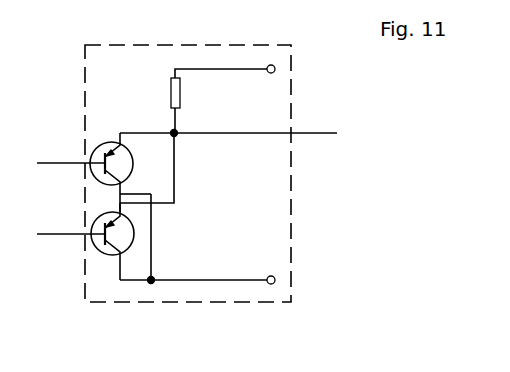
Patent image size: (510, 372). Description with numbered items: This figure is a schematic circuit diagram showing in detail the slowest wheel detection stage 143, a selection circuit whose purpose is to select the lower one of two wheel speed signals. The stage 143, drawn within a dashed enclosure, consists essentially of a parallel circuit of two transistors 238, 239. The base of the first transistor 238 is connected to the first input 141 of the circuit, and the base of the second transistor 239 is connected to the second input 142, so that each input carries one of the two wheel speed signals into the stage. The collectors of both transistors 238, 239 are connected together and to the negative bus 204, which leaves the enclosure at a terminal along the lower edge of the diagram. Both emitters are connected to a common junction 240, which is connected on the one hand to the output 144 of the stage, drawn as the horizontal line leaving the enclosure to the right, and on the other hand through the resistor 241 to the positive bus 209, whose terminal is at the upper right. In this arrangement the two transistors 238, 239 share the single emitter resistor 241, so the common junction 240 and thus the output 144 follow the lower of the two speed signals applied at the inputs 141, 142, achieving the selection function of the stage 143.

The input 141 is at (88, 158).
The input 142 is at (86, 238).
The slowest wheel detection stage 143 is at (291, 303).
The output 144 is at (301, 116).
The negative bus 204 is at (152, 279).
The positive bus 209 is at (176, 69).
The transistor 238 is at (119, 172).
The transistor 239 is at (110, 241).
The common junction 240 is at (176, 137).
The resistor 241 is at (180, 94).